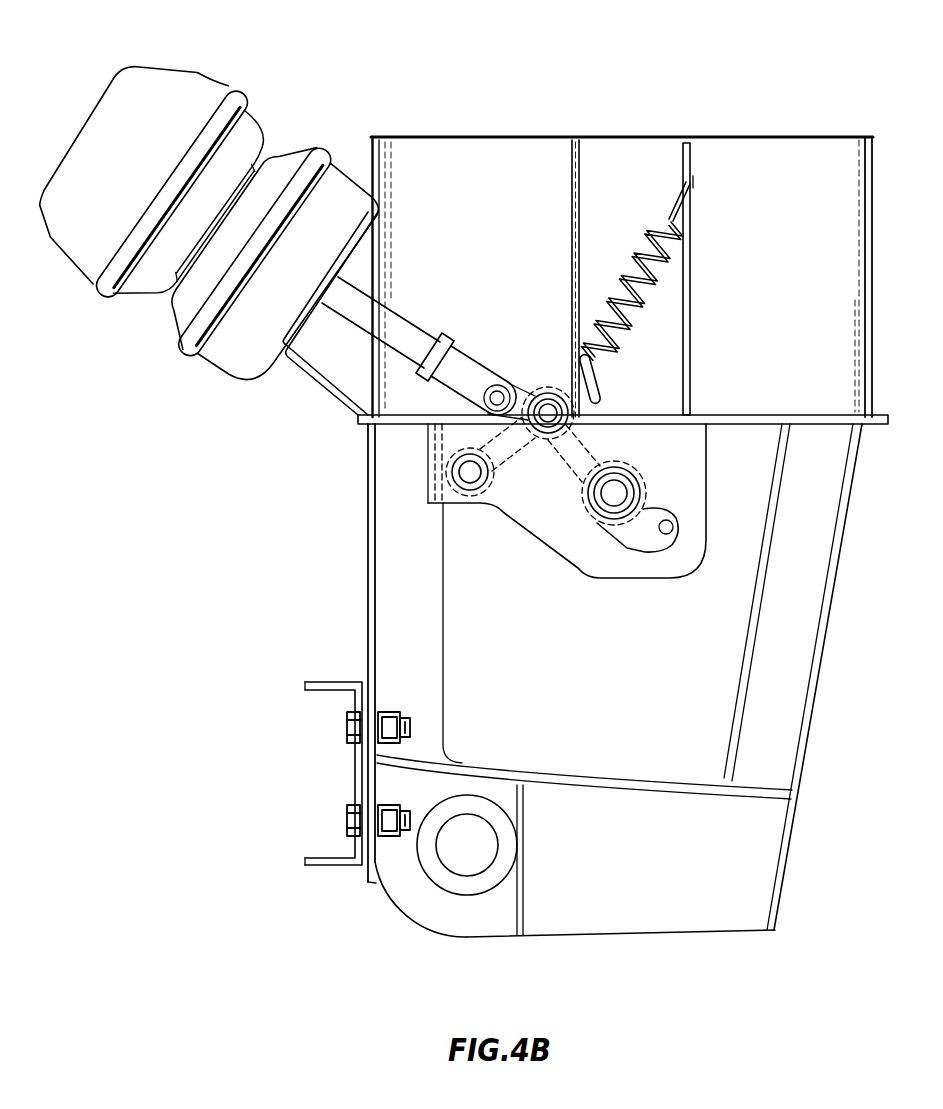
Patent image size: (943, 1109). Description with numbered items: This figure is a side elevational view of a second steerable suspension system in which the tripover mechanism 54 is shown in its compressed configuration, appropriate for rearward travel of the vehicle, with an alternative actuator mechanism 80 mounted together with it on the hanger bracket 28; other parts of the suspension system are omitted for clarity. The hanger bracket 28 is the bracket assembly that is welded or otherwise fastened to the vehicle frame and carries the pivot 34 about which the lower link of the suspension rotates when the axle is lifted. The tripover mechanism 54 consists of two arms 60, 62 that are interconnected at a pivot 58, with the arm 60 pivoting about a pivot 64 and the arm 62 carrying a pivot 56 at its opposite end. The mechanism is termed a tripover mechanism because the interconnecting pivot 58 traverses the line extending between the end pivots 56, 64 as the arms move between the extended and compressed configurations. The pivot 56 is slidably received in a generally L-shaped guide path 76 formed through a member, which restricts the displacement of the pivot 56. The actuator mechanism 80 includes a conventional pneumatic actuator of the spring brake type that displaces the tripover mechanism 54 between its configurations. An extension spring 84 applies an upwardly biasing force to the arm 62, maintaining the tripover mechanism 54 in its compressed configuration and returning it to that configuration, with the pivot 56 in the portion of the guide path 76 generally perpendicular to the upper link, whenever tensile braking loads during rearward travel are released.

The hanger bracket 28 is at (364, 612).
The pivot 34 is at (447, 877).
The tripover mechanism 54 is at (588, 598).
The pivot 56 is at (641, 487).
The pivot 58 is at (547, 396).
The arm 60 is at (516, 488).
The arm 62 is at (601, 456).
The pivot 64 is at (474, 491).
The guide path 76 is at (672, 538).
The actuator mechanism 80 is at (323, 118).
The extension spring 84 is at (667, 212).